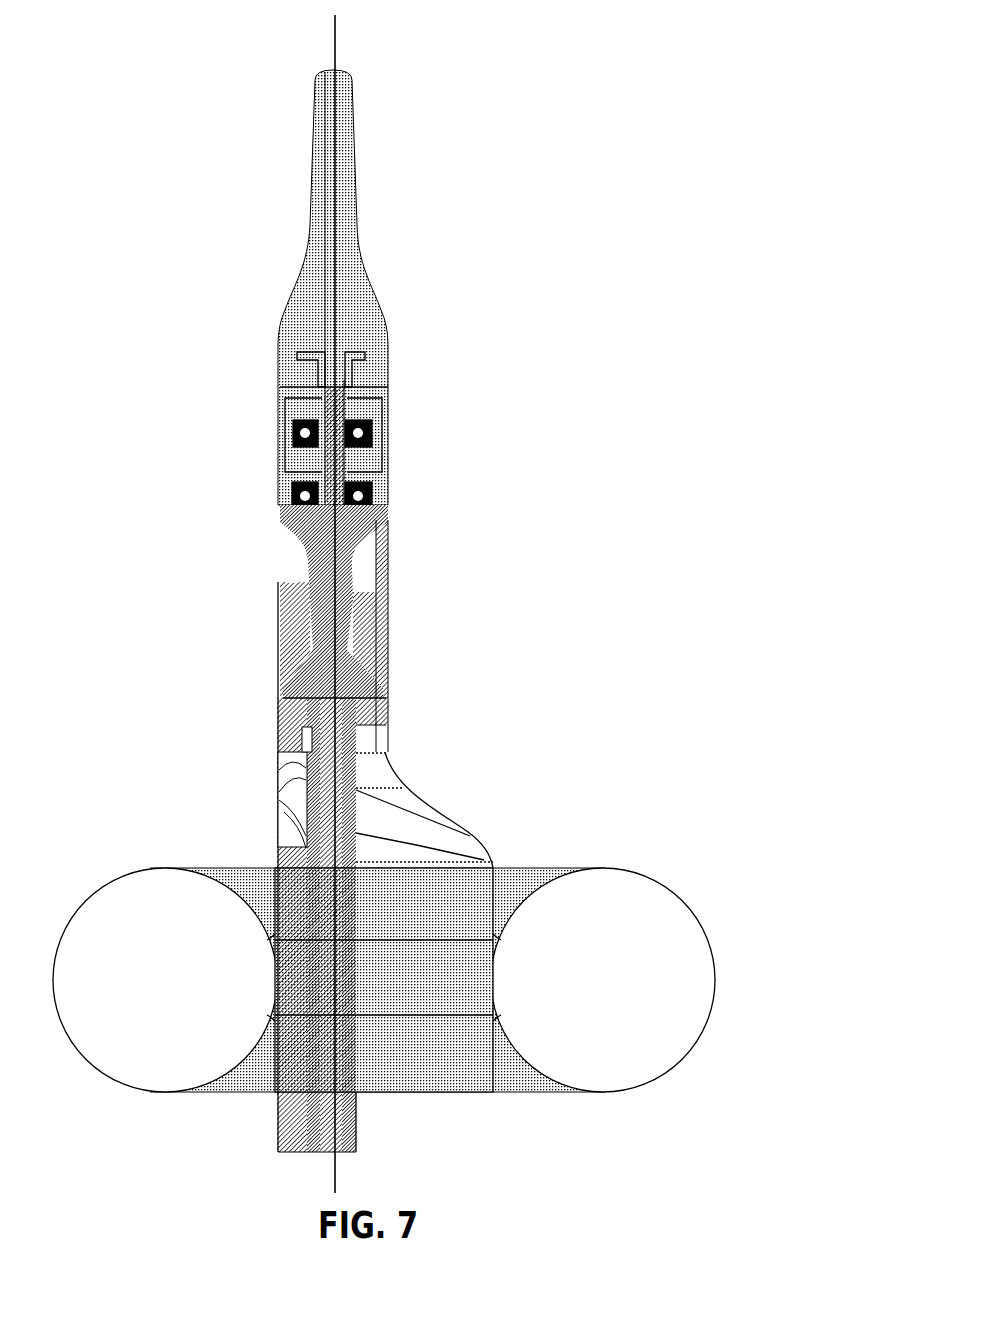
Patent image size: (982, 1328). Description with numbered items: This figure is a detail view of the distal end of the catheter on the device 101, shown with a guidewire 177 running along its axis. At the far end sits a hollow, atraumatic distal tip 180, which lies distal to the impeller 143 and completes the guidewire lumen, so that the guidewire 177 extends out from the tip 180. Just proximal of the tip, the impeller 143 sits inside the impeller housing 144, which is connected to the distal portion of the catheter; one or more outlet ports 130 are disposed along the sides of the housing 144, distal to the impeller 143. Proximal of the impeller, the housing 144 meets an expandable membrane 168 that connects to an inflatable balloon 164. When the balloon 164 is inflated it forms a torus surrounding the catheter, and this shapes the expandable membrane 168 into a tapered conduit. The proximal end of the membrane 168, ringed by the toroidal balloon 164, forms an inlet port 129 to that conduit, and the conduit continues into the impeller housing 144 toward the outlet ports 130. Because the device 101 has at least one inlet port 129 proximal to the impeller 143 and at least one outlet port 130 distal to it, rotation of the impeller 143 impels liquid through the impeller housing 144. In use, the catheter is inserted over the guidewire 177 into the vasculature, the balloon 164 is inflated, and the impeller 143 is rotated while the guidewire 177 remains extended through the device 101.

The device 101 is at (350, 277).
The guidewire 177 is at (335, 36).
The distal tip 180 is at (325, 158).
The outlet port 130 is at (320, 627).
The impeller 143 is at (355, 553).
The impeller housing 144 is at (386, 627).
The expandable membrane 168 is at (452, 815).
The balloon 164 is at (613, 866).
The inlet port 129 is at (430, 1103).